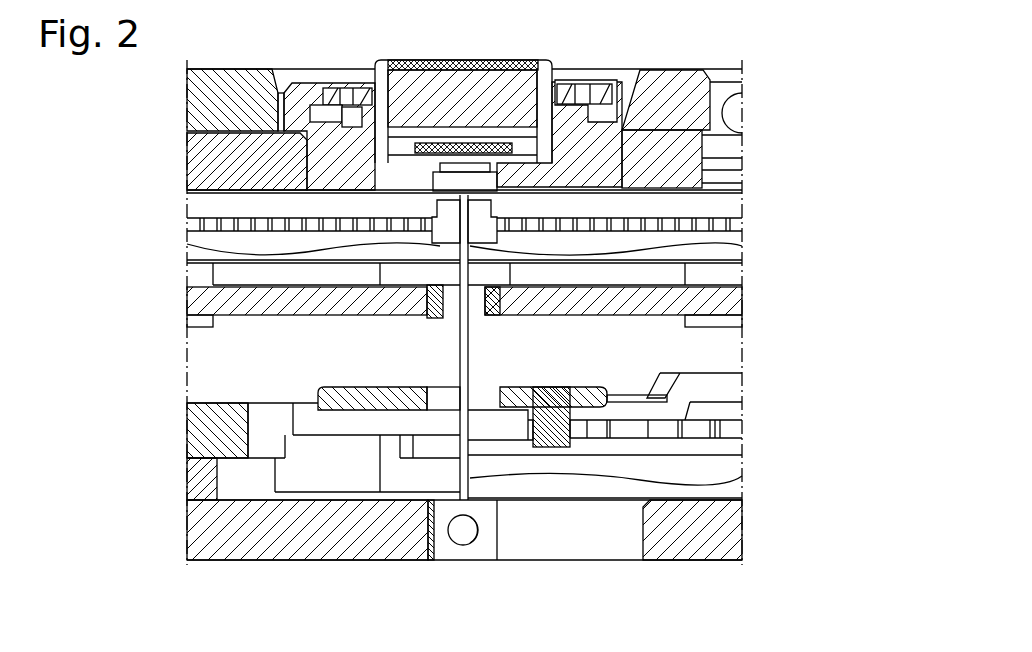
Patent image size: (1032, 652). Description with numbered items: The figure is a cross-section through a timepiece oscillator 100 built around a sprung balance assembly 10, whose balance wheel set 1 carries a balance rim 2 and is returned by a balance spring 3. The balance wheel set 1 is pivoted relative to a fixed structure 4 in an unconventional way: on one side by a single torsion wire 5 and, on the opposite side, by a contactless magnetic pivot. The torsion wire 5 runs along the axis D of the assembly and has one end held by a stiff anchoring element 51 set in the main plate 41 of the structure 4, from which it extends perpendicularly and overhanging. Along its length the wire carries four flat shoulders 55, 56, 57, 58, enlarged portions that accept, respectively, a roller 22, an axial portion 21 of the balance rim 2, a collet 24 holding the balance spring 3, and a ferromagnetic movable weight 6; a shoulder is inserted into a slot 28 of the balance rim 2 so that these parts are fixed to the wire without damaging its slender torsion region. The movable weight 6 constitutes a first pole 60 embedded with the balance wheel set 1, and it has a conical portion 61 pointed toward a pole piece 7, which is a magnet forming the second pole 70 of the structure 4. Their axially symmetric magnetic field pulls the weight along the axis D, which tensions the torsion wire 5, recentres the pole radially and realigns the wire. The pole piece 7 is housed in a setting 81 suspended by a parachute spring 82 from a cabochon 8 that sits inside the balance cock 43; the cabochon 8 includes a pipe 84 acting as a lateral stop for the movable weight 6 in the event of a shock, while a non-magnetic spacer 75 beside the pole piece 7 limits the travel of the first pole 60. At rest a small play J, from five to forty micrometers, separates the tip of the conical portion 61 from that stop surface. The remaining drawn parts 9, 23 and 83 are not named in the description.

The balance wheel set 1 is at (460, 352).
The balance rim 2 is at (765, 308).
The balance spring 3 is at (446, 213).
The structure 4 is at (770, 560).
The torsion wire 5 is at (650, 482).
The movable weight 6 is at (492, 193).
The pole piece 7 is at (476, 152).
The cabochon 8 is at (517, 174).
The screw 9 is at (697, 432).
The sprung balance assembly 10 is at (373, 324).
The axial portion 21 is at (205, 300).
The roller 22 is at (353, 397).
The block 23 is at (560, 387).
The collet 24 is at (640, 254).
The slot 28 is at (640, 224).
The main plate 41 is at (640, 538).
The balance cock 43 is at (700, 150).
The anchoring element 51 is at (478, 548).
The shoulder 55 is at (443, 397).
The shoulder 56 is at (443, 318).
The shoulder 57 is at (458, 182).
The shoulder 58 is at (400, 145).
The first pole 60 is at (690, 122).
The conical portion 61 is at (466, 142).
The second pole 70 is at (700, 96).
The non-magnetic spacer 75 is at (532, 128).
The setting 81 is at (682, 70).
The parachute spring 82 is at (560, 80).
The spring 83 is at (310, 83).
The pipe 84 is at (372, 75).
The timepiece oscillator 100 is at (664, 364).
The axis D is at (478, 348).
The play J is at (481, 128).